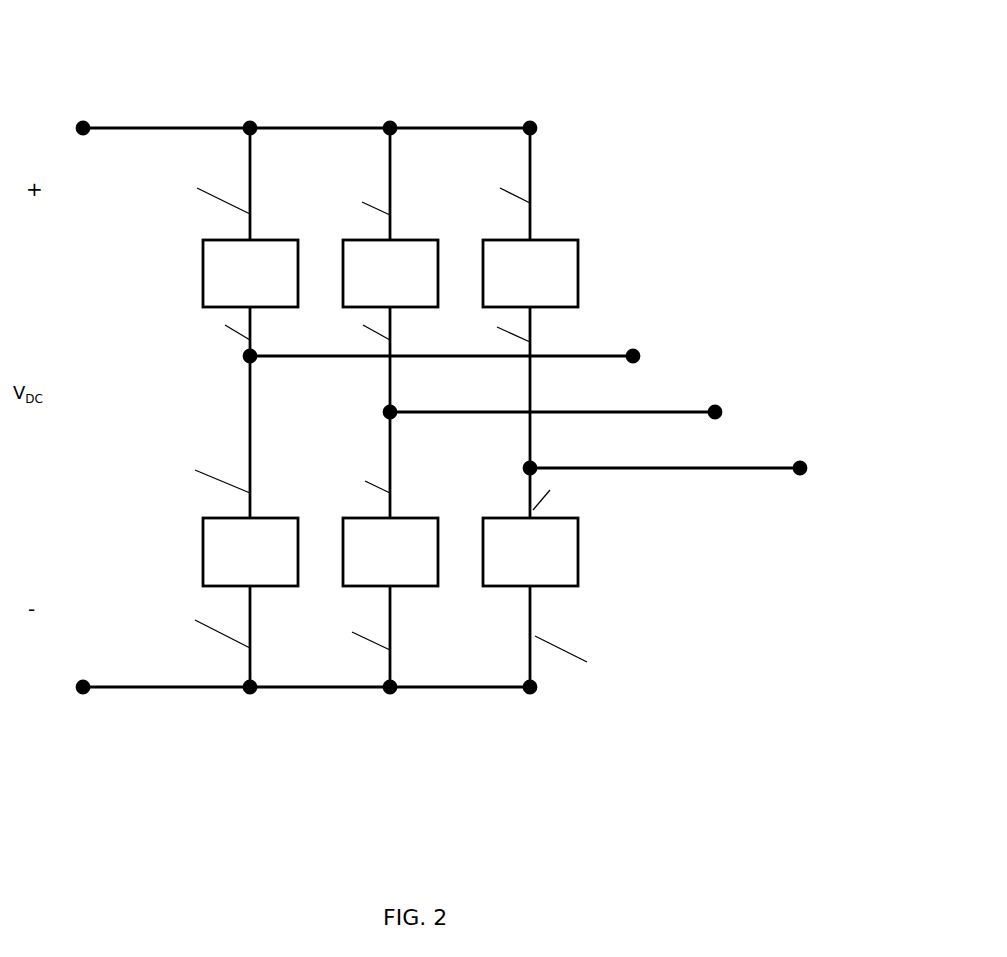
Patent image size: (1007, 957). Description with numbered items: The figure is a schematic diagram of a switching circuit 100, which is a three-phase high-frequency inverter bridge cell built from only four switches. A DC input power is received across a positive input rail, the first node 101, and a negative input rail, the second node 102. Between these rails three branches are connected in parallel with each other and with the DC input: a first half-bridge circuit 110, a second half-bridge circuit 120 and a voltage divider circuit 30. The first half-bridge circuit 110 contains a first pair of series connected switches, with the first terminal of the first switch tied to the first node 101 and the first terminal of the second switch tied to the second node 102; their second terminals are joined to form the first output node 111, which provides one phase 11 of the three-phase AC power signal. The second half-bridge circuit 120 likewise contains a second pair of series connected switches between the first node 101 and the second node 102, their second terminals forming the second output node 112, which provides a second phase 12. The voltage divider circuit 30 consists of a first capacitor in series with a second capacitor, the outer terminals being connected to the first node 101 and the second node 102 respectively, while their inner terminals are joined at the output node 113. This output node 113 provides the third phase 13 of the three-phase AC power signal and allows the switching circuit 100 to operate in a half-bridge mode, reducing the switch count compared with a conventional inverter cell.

The switching circuit 100 is at (636, 54).
The first node 101 is at (83, 126).
The second node 102 is at (83, 693).
The first half-bridge circuit 110 is at (247, 724).
The second half-bridge circuit 120 is at (387, 724).
The voltage divider circuit 30 is at (530, 724).
The first output node 111 is at (240, 353).
The second output node 112 is at (382, 410).
The output node 113 is at (523, 466).
The phase 11 is at (640, 354).
The second phase 12 is at (722, 410).
The third phase 13 is at (808, 466).